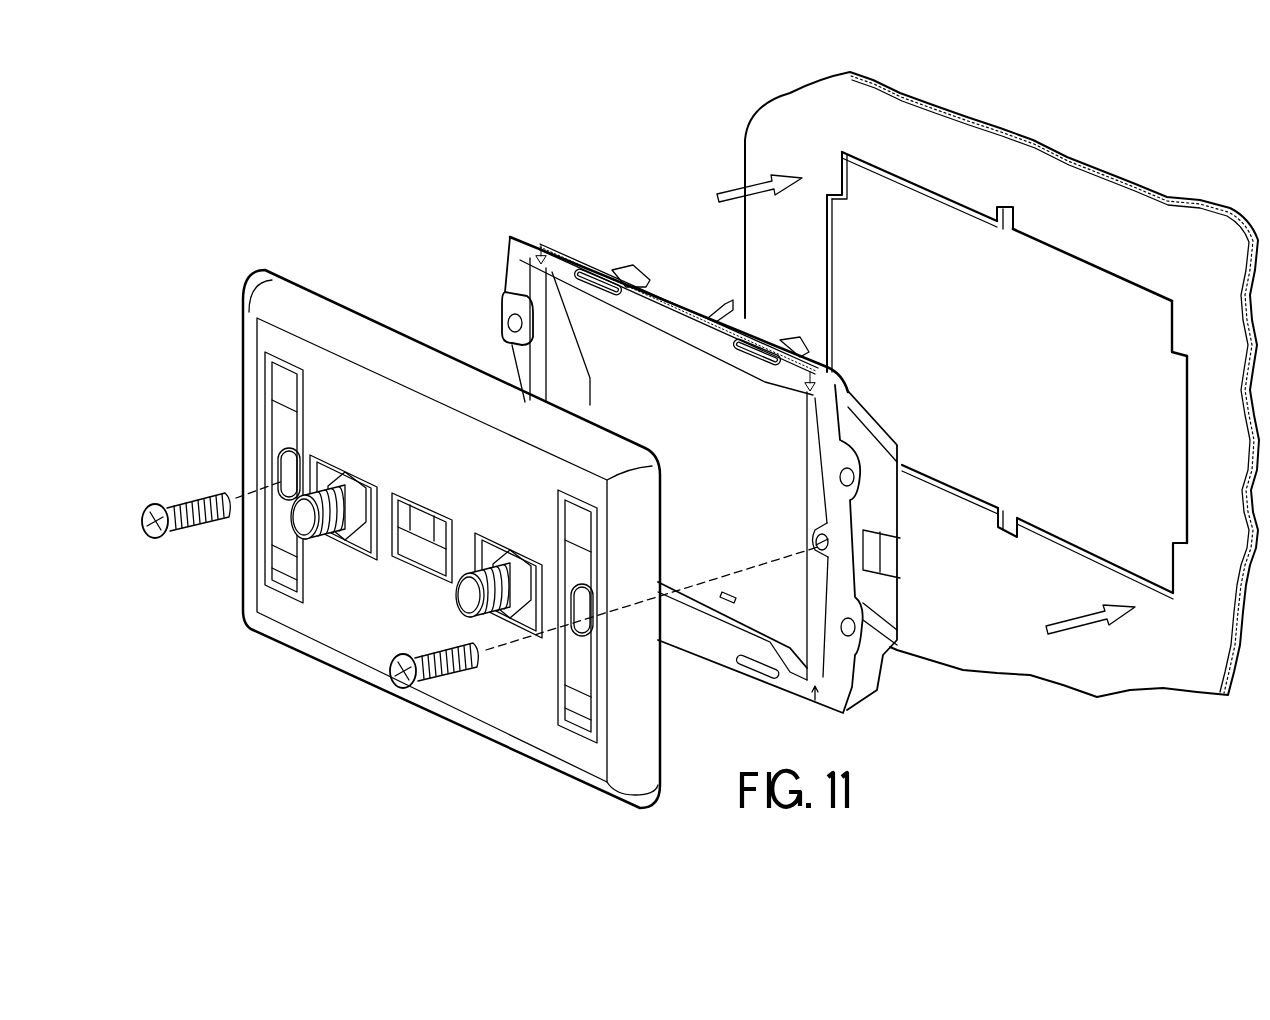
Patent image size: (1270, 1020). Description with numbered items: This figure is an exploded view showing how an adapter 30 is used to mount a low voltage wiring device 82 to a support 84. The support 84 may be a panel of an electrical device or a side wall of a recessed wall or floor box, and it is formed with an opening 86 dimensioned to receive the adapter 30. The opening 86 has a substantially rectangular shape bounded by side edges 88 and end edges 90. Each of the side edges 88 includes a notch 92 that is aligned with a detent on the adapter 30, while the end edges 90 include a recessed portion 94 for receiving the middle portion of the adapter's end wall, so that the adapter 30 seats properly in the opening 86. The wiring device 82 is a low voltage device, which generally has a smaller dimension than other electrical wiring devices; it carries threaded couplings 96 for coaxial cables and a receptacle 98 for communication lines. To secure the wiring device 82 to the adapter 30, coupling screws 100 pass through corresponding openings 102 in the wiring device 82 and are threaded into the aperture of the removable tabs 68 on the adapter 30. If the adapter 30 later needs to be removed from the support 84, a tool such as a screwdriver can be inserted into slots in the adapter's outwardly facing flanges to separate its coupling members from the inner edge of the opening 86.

The adapter 30 is at (511, 237).
The removable tabs 68 is at (592, 394).
The low voltage wiring device 82 is at (281, 270).
The support 84 is at (1175, 222).
The opening 86 is at (1040, 327).
The side edges 88 is at (953, 208).
The end edges 90 is at (870, 207).
The notch 92 is at (1003, 232).
The recessed portion 94 is at (832, 303).
The threaded couplings 96 is at (322, 542).
The receptacle 98 is at (433, 527).
The coupling screws 100 is at (186, 503).
The openings 102 is at (291, 482).